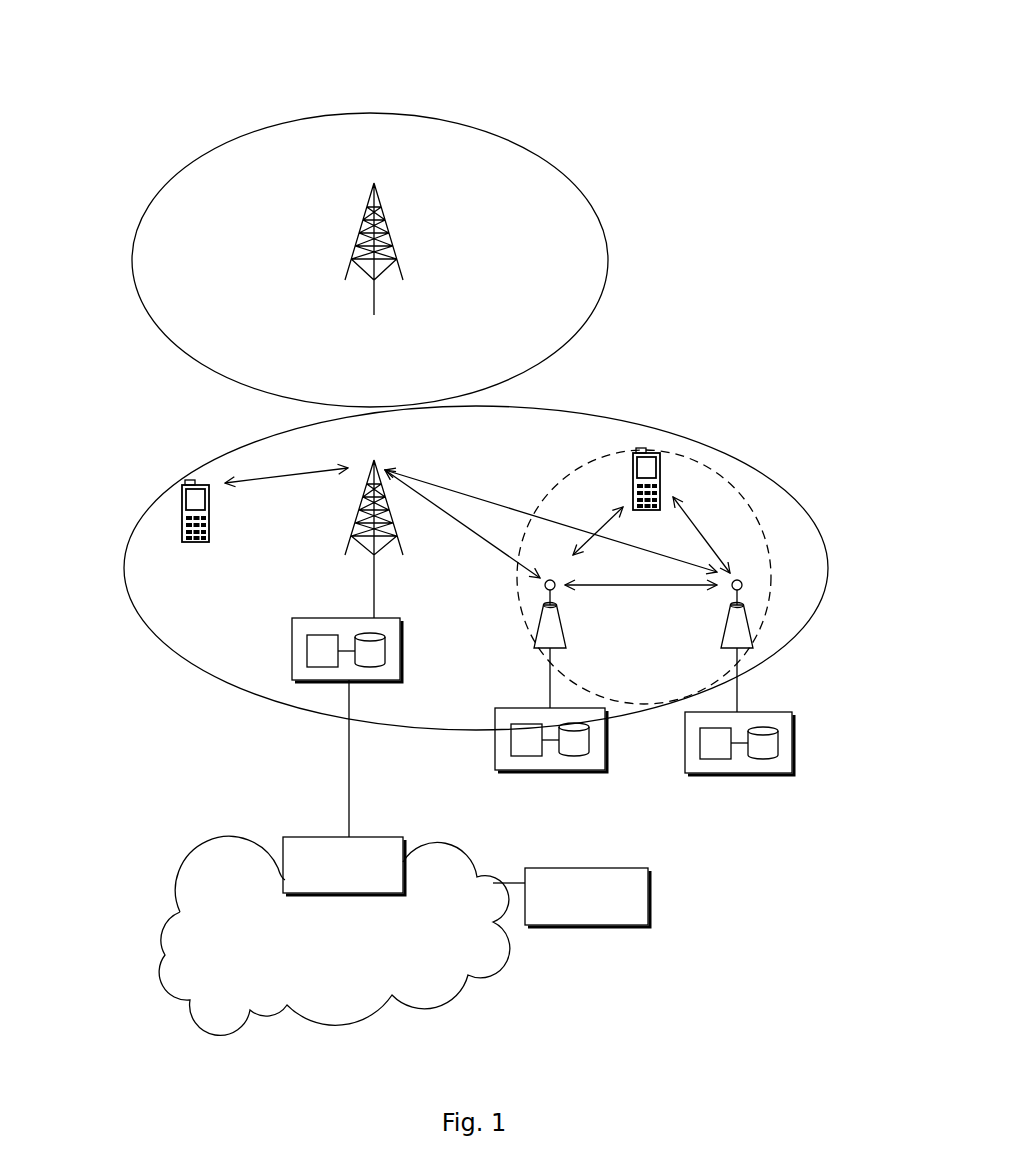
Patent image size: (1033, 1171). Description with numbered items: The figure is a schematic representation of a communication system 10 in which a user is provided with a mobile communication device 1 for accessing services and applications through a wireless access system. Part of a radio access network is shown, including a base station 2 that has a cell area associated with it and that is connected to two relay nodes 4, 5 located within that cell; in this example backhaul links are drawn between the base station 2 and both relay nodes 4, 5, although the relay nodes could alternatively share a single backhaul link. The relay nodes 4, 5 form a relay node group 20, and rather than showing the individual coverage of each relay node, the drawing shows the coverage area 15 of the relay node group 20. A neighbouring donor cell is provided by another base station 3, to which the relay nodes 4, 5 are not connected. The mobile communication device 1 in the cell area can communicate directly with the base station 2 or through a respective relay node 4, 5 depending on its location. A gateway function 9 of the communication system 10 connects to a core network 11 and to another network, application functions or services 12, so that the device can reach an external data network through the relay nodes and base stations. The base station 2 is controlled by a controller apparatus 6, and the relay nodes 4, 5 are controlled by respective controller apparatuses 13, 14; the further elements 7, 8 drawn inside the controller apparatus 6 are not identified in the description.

The communication system 10 is at (172, 68).
The mobile communication device 1 is at (182, 543).
The base station 2 is at (358, 518).
The base station 3 is at (342, 250).
The relay node 4 is at (563, 645).
The relay node 5 is at (722, 640).
The controller apparatus 6 is at (301, 704).
The database 7 is at (370, 633).
The processor 8 is at (307, 658).
The gateway function 9 is at (280, 838).
The core network 11 is at (220, 928).
The application functions or services 12 is at (650, 863).
The controller apparatus 13 is at (605, 770).
The controller apparatus 14 is at (692, 775).
The coverage area 15 is at (737, 488).
The relay node group 20 is at (755, 560).